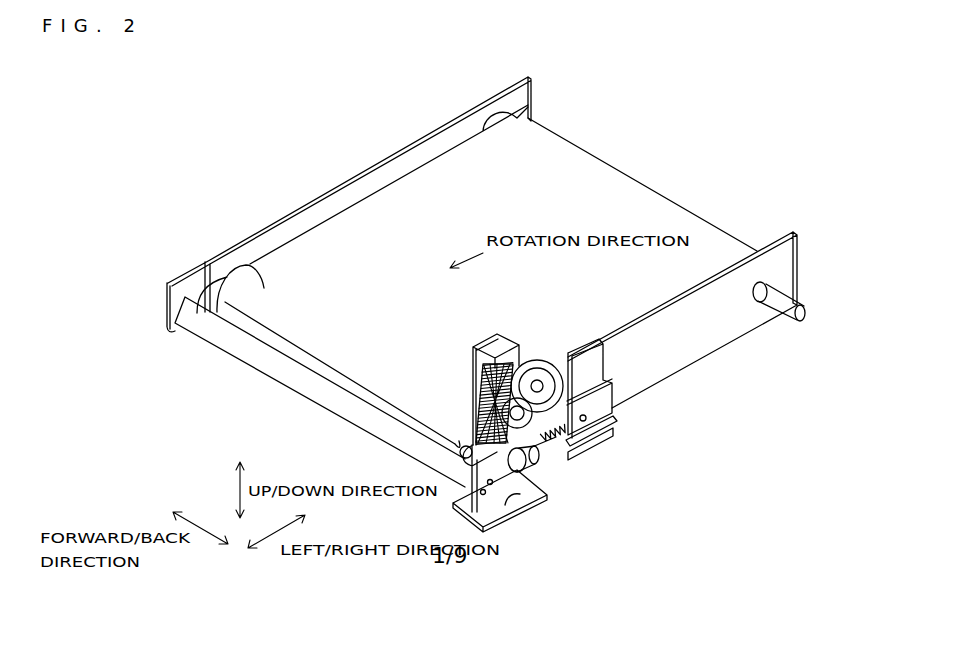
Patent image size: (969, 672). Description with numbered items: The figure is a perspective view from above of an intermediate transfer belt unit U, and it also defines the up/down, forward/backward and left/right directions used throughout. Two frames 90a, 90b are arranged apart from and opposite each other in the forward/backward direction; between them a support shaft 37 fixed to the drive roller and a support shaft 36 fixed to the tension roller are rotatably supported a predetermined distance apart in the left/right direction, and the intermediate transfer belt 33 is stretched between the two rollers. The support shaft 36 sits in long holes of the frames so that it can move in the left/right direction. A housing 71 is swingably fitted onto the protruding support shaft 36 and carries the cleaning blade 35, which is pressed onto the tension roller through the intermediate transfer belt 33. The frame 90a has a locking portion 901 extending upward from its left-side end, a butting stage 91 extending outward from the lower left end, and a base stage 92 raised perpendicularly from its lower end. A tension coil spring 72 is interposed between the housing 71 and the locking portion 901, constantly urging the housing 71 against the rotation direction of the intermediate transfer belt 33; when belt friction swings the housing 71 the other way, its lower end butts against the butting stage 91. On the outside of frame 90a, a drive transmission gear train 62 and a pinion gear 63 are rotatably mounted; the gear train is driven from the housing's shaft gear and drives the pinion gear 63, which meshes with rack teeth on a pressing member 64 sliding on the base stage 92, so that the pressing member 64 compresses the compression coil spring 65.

The intermediate transfer belt unit U is at (224, 152).
The intermediate transfer belt 33 is at (612, 192).
The cleaning blade 35 is at (288, 352).
The support shaft 36 is at (540, 469).
The support shaft 37 is at (803, 312).
The drive transmission gear train 62 is at (533, 360).
The pinion gear 63 is at (575, 358).
The pressing member 64 is at (592, 452).
The compression coil spring 65 is at (560, 461).
The housing 71 is at (248, 381).
The tension coil spring 72 is at (480, 400).
The frame 90a is at (677, 340).
The frame 90b is at (350, 177).
The butting stage 91 is at (528, 508).
The base stage 92 is at (610, 447).
The locking portion 901 is at (500, 345).